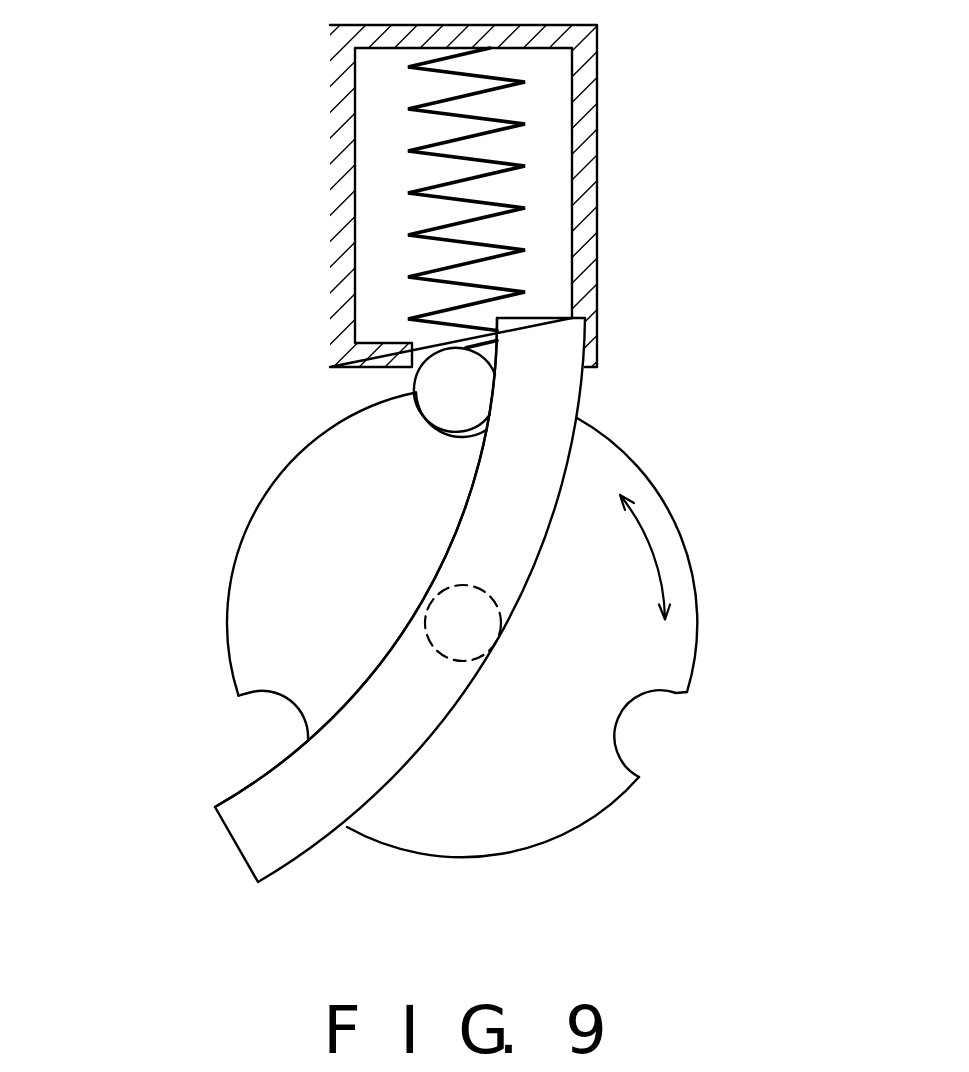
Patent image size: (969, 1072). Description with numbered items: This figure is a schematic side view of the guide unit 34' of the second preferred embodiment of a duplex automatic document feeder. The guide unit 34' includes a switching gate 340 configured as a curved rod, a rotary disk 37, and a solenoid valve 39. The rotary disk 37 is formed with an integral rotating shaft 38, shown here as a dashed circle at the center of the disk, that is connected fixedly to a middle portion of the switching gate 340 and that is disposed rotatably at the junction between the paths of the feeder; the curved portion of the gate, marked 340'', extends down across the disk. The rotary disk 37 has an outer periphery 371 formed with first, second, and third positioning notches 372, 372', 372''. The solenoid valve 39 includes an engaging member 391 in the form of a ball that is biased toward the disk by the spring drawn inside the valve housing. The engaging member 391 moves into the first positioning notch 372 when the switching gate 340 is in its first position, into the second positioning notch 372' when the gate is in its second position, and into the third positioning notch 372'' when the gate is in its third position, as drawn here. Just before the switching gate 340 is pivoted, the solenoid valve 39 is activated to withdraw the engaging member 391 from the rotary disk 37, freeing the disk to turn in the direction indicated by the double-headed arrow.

The guide unit 34' is at (469, 451).
The solenoid valve 39 is at (270, 116).
The engaging member 391 is at (433, 387).
The switching gate 340 is at (497, 572).
The curved arm portion 340'' is at (322, 562).
The rotary disk 37 is at (706, 465).
The wheel periphery 371 is at (700, 610).
The first positioning notch 372 is at (199, 731).
The second positioning notch 372' is at (698, 745).
The third positioning notch 372'' is at (337, 429).
The rotating shaft 38 is at (418, 614).